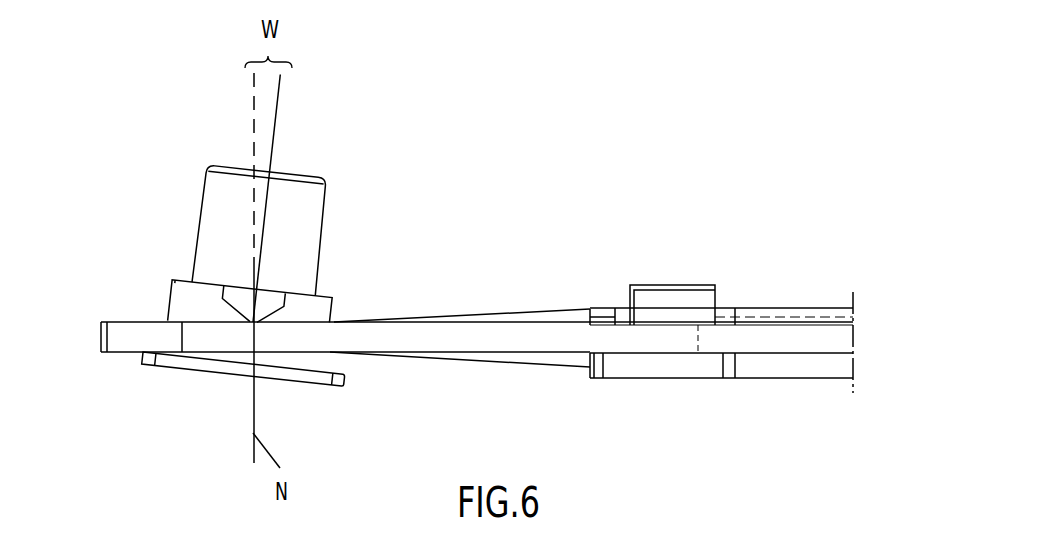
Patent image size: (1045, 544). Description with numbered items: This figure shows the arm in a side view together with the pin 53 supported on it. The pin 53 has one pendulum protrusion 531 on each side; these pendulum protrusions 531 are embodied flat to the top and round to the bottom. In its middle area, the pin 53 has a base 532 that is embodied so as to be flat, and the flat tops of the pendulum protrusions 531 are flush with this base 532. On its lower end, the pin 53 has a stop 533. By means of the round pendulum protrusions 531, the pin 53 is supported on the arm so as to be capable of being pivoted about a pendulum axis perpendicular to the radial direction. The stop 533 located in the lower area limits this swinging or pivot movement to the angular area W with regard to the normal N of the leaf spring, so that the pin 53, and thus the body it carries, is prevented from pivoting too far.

The pin 53 is at (310, 218).
The pendulum protrusion 531 is at (232, 297).
The base 532 is at (327, 297).
The stop 533 is at (325, 382).